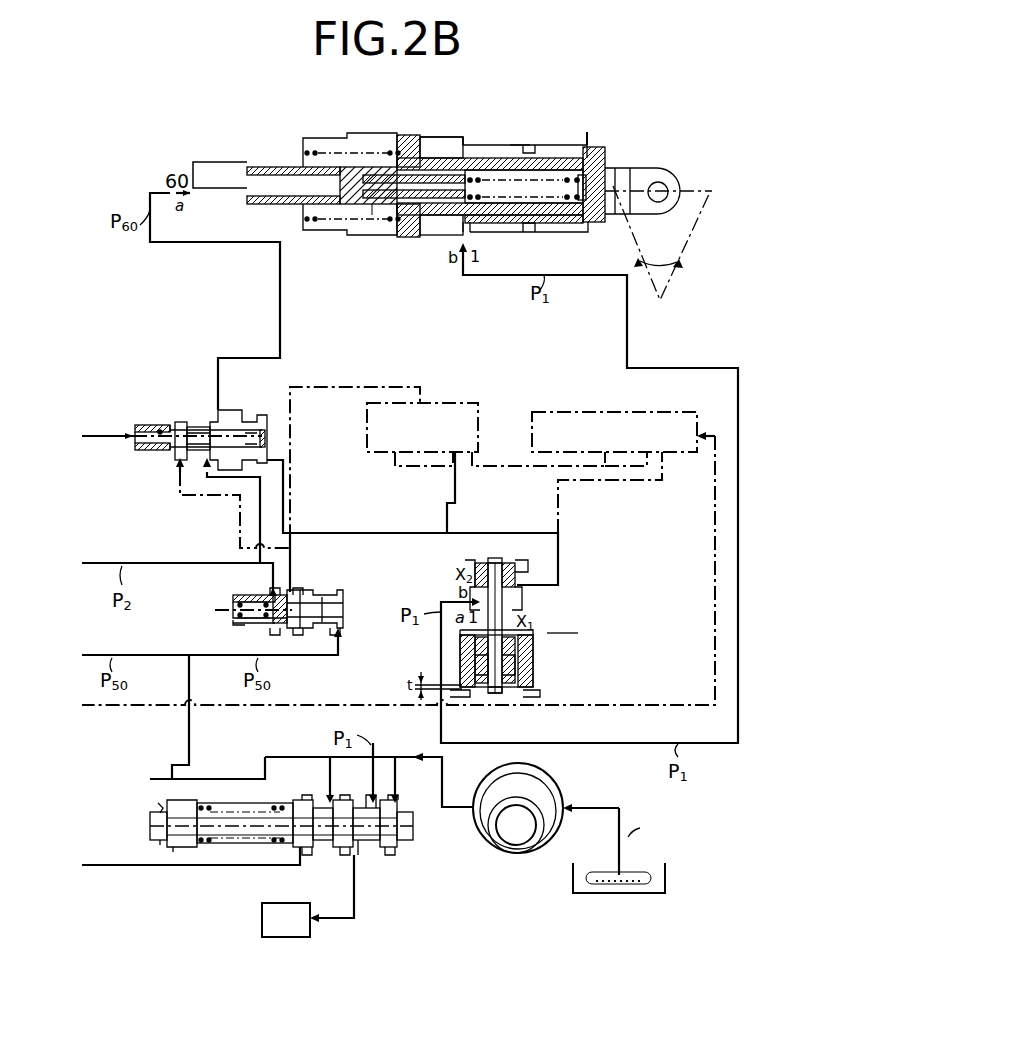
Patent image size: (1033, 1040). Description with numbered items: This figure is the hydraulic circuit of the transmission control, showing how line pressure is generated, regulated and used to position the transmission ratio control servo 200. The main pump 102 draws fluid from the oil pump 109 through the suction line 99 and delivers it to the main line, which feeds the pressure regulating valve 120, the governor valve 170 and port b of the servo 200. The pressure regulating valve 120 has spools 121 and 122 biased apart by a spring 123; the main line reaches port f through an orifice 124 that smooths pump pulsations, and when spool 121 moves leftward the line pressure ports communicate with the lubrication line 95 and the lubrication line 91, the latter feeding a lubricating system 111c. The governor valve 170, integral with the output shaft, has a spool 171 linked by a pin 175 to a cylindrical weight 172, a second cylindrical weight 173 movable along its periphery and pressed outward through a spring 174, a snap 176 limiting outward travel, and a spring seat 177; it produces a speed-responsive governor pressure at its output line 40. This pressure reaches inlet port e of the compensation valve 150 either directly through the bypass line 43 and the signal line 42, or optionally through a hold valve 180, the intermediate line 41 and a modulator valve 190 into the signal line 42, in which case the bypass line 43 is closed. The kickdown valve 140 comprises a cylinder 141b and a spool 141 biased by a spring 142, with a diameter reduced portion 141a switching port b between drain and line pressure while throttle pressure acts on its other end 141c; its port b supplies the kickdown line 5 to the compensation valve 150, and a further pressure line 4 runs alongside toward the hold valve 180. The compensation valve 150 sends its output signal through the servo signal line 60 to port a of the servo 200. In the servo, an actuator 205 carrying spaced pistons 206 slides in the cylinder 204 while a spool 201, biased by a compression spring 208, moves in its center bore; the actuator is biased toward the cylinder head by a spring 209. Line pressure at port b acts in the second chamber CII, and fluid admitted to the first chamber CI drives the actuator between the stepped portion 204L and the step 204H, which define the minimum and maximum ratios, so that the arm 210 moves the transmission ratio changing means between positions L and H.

The transmission ratio control servo 200 is at (510, 142).
The spool 201 is at (357, 204).
The cylinder 204 is at (417, 135).
The stepped portion 204L is at (350, 137).
The step 204H is at (463, 137).
The actuator 205 is at (593, 158).
The pistons 206 is at (518, 145).
The compression spring 208 is at (568, 177).
The spring 209 is at (390, 212).
The arm 210 is at (653, 170).
The first chamber CI is at (363, 137).
The second chamber CII is at (445, 137).
The line P60 60 is at (225, 436).
The compensation valve 150 is at (150, 455).
The line P42 42 is at (330, 530).
The line P43 43 is at (505, 521).
The line P5 5 is at (238, 510).
The line P4 4 is at (715, 568).
The line P41 41 is at (513, 468).
The modulator valve 190 is at (422, 427).
The hold valve 180 is at (614, 432).
The line P40 40 is at (560, 568).
The kickdown valve 140 is at (243, 597).
The spool 141 is at (327, 592).
The diameter reduced portion 141a is at (302, 628).
The cylinder 141b is at (343, 598).
The other end of spool 141c is at (343, 612).
The spring 142 is at (240, 625).
The governor valve 170 is at (540, 647).
The spool 171 is at (478, 560).
The cylindrical weight 172 is at (462, 690).
The cylindrical weight 173 is at (533, 680).
The spring 174 is at (460, 650).
The pin 175 is at (490, 695).
The snap 176 is at (525, 697).
The valve spring seat 177 is at (512, 695).
The main pump 102 is at (555, 785).
The line P99 99 is at (617, 812).
The oil pump 109 is at (574, 885).
The pressure regulating valve 120 is at (388, 872).
The spool 121 is at (300, 805).
The spool 122 is at (185, 808).
The spring 123 is at (203, 845).
The orifice 124 is at (390, 772).
The line P95 95 is at (135, 880).
The line P91 91 is at (340, 935).
The lubricating system 111c is at (286, 920).